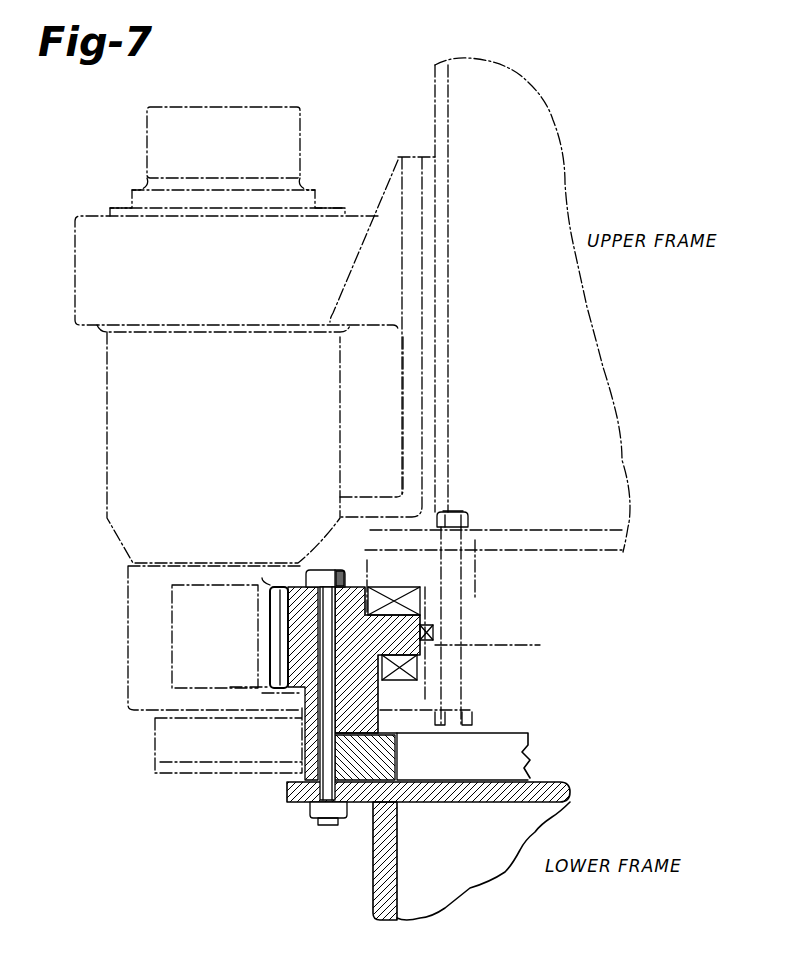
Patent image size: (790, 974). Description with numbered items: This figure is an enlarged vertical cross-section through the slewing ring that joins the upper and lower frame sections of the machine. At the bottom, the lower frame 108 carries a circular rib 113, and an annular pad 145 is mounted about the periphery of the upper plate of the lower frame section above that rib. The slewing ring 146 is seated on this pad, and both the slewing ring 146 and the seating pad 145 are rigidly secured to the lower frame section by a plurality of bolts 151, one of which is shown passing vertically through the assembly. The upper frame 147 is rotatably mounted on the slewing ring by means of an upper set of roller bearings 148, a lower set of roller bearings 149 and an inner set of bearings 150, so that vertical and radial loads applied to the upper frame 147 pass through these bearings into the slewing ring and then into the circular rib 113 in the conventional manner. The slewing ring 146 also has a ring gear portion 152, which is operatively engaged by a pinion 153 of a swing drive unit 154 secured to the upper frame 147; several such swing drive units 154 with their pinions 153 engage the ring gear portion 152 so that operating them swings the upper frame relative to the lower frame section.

The lower frame 108 is at (508, 832).
The circular rib 113 is at (373, 875).
The annular pad 145 is at (507, 750).
The slewing ring 146 is at (423, 620).
The upper frame 147 is at (585, 500).
The upper set of roller bearings 148 is at (363, 585).
The lower set of roller bearings 149 is at (403, 680).
The inner set of bearings 150 is at (433, 635).
The bolt 151 is at (323, 722).
The ring gear portion 152 is at (290, 643).
The pinion 153 is at (172, 638).
The swing drive unit 154 is at (107, 478).